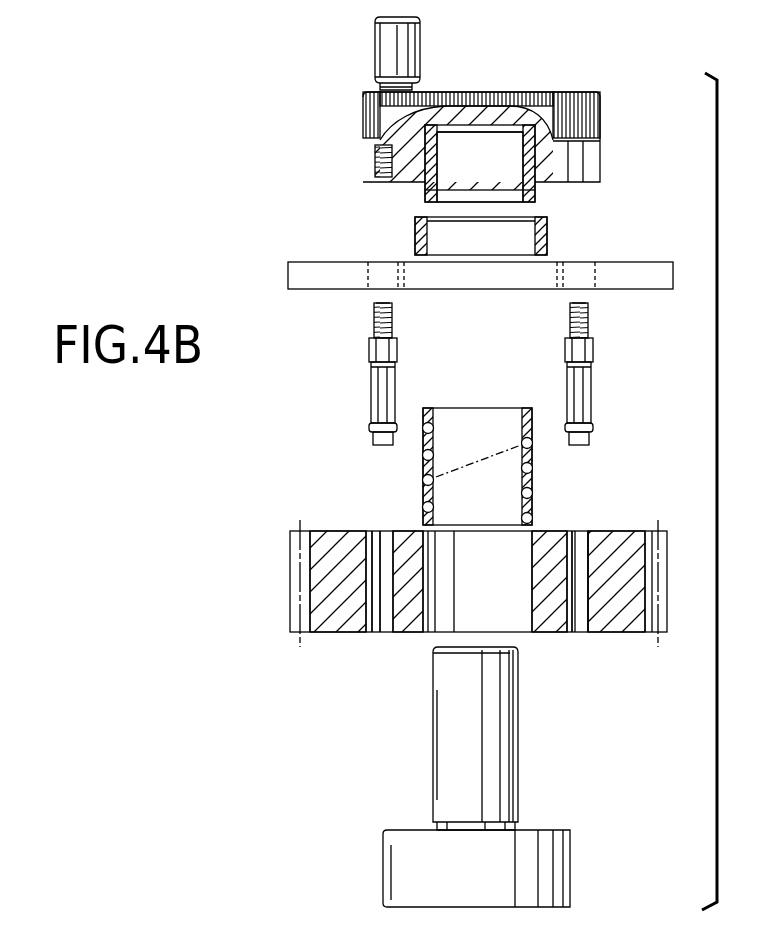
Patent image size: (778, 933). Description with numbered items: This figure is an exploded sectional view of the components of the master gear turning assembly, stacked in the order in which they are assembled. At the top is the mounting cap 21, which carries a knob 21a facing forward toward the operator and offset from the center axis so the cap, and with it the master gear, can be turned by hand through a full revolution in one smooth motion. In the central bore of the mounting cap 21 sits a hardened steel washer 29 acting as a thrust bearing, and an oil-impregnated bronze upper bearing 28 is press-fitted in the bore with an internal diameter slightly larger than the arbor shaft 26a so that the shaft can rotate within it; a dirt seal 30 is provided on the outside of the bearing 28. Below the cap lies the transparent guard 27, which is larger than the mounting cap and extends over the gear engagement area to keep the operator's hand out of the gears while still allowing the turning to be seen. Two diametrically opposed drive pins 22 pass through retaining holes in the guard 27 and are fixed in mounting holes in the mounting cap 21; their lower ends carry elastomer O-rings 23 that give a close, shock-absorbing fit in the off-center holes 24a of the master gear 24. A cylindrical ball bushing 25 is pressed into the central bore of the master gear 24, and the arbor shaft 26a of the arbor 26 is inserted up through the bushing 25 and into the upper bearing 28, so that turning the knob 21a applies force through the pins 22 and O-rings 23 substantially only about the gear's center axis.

The knob 21a is at (407, 58).
The mounting cap 21 is at (523, 93).
The upper bearing 28 is at (433, 182).
The hardened steel washer 29 is at (503, 130).
The dirt seal 30 is at (547, 223).
The transparent guard 27 is at (661, 257).
The drive pins 22 is at (602, 346).
The O-rings 23 is at (594, 428).
The ball bushing 25 is at (533, 481).
The master gear 24 is at (340, 542).
The off-center holes 24a is at (578, 648).
The arbor shaft 26a is at (543, 725).
The arbor 26 is at (557, 862).